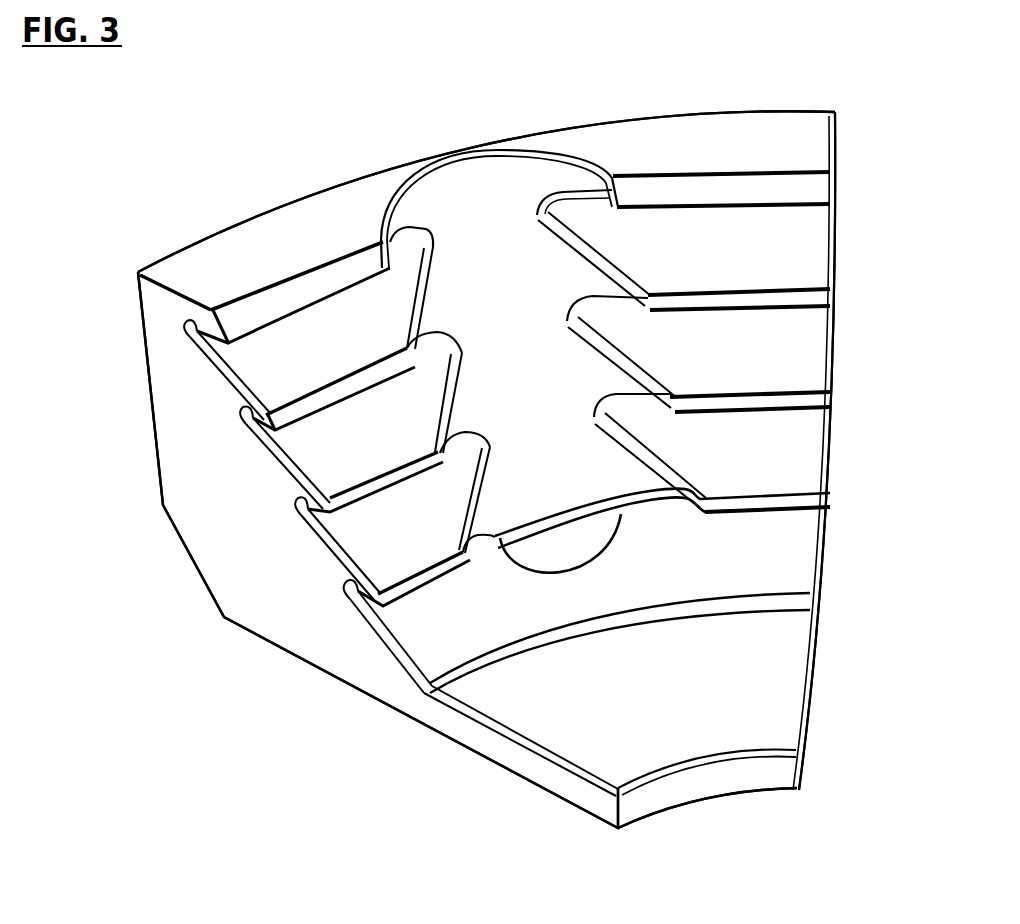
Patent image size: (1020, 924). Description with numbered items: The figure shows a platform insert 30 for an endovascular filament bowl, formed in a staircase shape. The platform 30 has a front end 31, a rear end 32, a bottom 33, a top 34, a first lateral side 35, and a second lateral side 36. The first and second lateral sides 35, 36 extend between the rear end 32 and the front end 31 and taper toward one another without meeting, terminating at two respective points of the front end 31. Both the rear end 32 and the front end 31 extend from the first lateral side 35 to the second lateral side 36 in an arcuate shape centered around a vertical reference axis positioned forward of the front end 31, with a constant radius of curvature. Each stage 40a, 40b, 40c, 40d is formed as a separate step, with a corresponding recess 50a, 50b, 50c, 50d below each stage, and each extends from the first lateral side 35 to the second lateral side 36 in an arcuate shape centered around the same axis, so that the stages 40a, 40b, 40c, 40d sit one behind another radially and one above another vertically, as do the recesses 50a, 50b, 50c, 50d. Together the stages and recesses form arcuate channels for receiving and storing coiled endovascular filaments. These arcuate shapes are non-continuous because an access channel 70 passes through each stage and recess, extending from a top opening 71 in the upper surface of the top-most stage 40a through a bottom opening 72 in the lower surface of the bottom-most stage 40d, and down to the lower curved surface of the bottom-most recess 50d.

The platform insert 30 is at (148, 184).
The front end 31 is at (693, 788).
The rear end 32 is at (148, 397).
The bottom 33 is at (380, 693).
The top 34 is at (672, 115).
The first lateral side 35 is at (257, 580).
The second lateral side 36 is at (840, 367).
The top-most stage 40a is at (290, 256).
The stage 40b is at (340, 353).
The stage 40c is at (380, 446).
The bottom-most stage 40d is at (424, 540).
The recess 50a is at (196, 350).
The recess 50b is at (249, 436).
The recess 50c is at (305, 528).
The bottom-most recess 50d is at (358, 612).
The access channel 70 is at (479, 194).
The top opening 71 is at (565, 158).
The bottom opening 72 is at (640, 500).